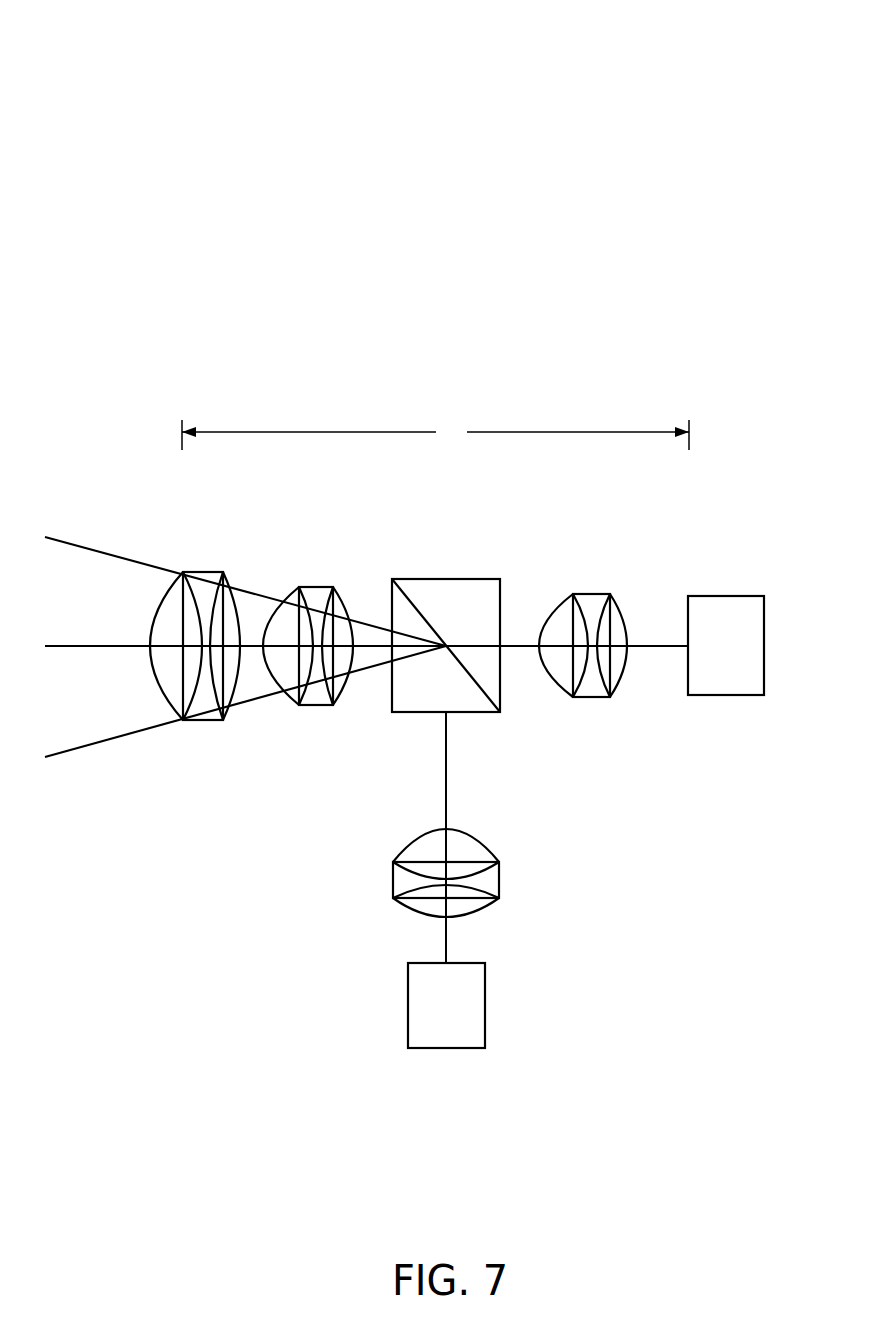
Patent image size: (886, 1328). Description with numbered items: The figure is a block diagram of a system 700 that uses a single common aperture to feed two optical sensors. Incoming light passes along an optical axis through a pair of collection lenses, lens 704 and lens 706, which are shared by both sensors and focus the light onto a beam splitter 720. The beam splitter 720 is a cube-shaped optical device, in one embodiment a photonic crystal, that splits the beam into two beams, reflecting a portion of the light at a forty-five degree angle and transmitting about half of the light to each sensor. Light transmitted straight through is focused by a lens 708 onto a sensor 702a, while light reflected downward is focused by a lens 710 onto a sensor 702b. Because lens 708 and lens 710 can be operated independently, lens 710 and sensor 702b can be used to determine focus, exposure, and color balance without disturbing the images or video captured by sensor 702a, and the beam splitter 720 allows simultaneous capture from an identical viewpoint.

The system 700 is at (210, 35).
The sensor 702a is at (726, 645).
The sensor 702b is at (446, 1005).
The lens 704 is at (203, 568).
The lens 706 is at (315, 583).
The lens 708 is at (592, 592).
The lens 710 is at (505, 880).
The beam splitter 720 is at (445, 576).